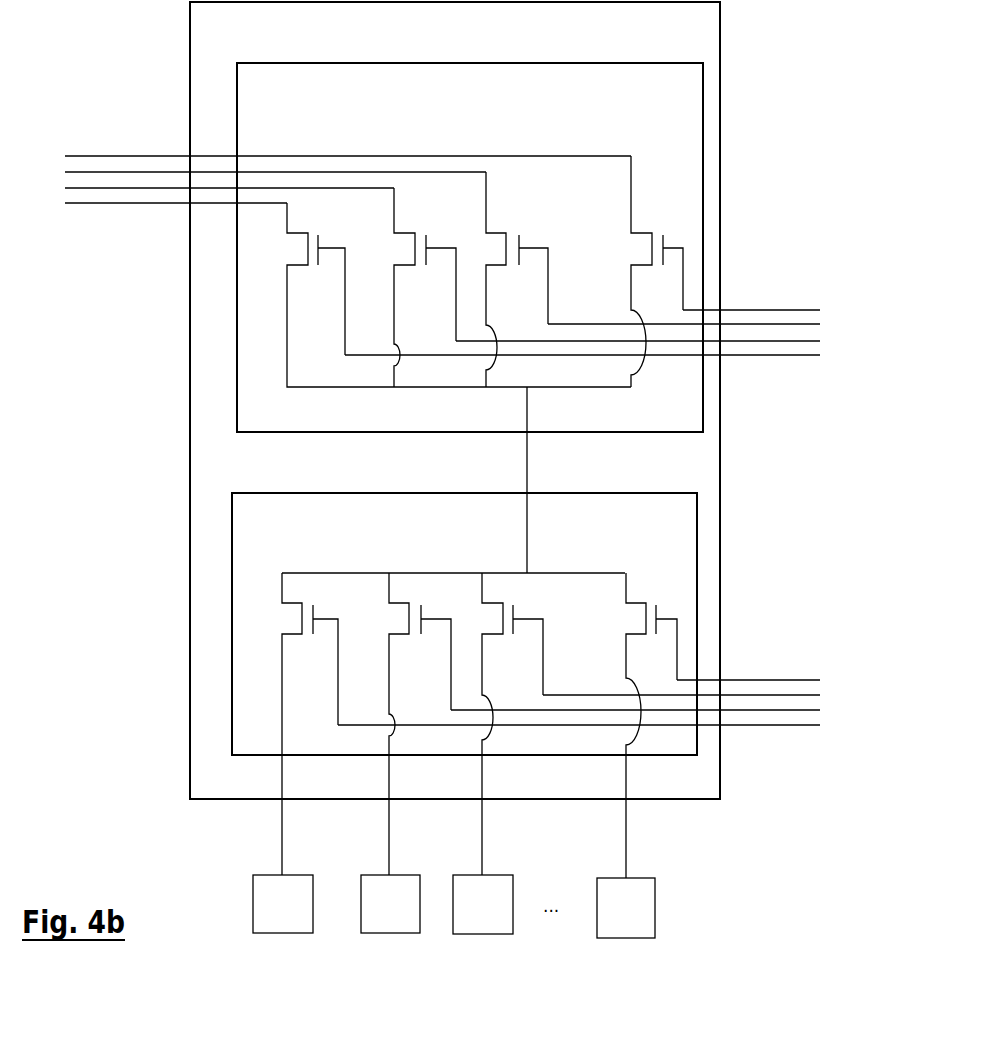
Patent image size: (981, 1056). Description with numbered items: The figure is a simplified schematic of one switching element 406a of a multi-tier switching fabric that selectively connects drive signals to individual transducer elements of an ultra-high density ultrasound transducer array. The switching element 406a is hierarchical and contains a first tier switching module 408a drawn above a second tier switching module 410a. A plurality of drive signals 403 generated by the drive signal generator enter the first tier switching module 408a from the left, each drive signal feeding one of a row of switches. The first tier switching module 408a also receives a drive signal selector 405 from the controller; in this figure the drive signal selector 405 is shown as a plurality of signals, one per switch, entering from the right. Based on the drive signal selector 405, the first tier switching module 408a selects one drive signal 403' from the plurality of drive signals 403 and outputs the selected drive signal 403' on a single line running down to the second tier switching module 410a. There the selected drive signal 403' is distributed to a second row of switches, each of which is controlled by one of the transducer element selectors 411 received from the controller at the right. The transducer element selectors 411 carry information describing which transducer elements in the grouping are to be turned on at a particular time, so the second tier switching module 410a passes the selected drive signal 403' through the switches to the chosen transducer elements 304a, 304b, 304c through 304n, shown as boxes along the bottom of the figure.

The switching element 406a is at (455, 400).
The first tier switching module 408a is at (470, 247).
The second tier switching module 410a is at (464, 685).
The drive signals 403 is at (348, 149).
The selected drive signal 403' is at (576, 480).
The drive signal selector 405 is at (778, 358).
The transducer element selectors 411 is at (770, 681).
The transducer element 304a is at (283, 904).
The transducer element 304b is at (390, 904).
The transducer element 304c is at (483, 904).
The transducer element 304n is at (626, 908).